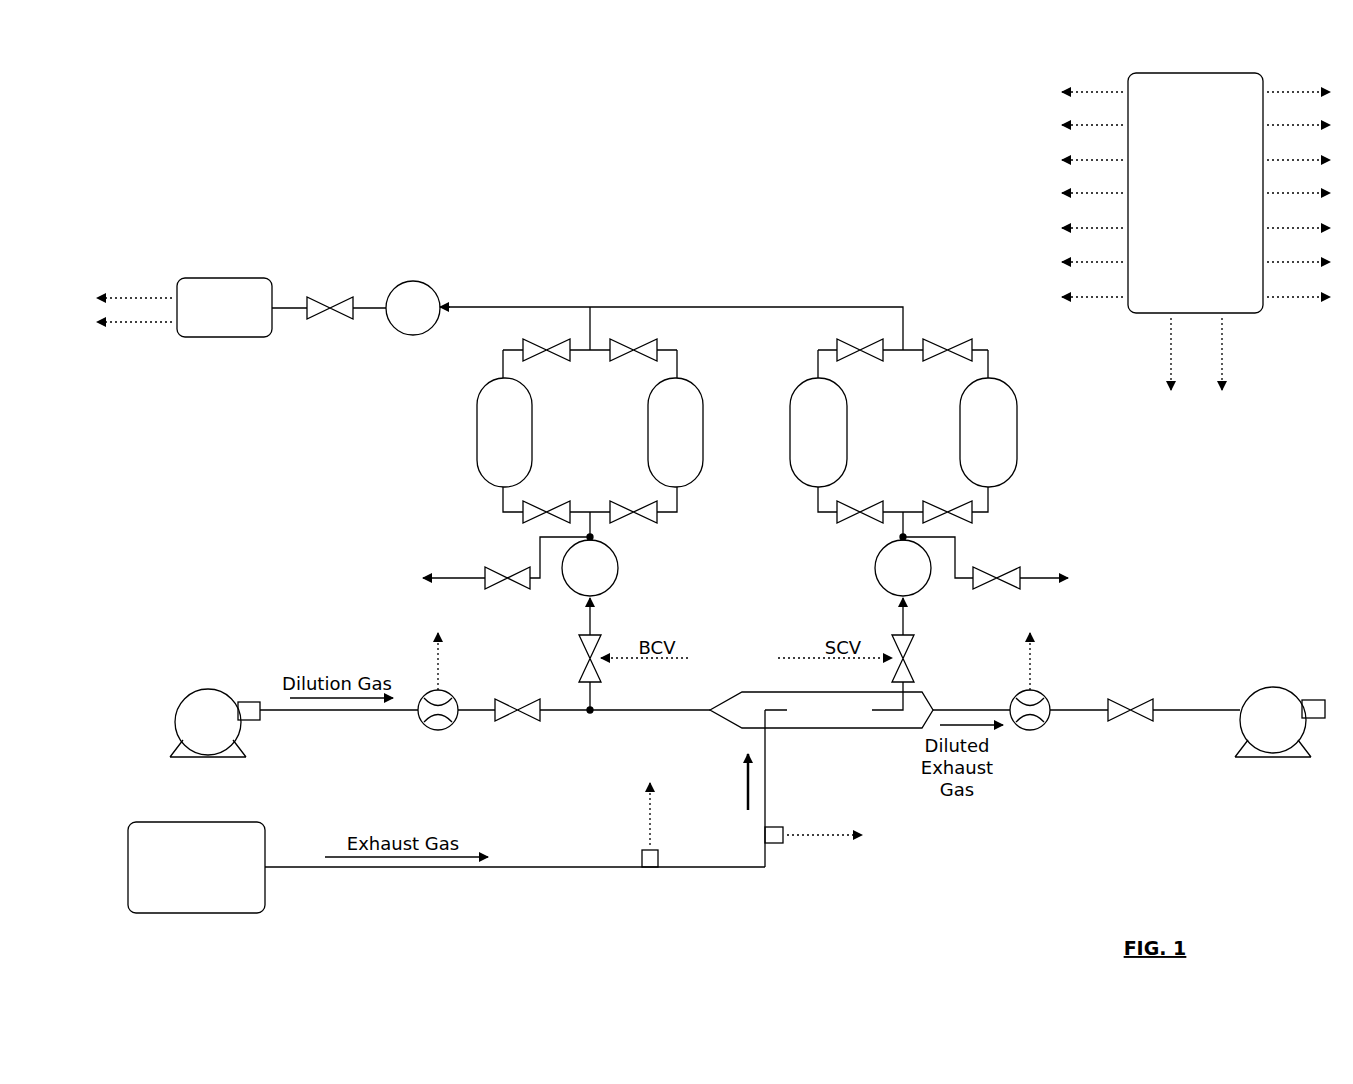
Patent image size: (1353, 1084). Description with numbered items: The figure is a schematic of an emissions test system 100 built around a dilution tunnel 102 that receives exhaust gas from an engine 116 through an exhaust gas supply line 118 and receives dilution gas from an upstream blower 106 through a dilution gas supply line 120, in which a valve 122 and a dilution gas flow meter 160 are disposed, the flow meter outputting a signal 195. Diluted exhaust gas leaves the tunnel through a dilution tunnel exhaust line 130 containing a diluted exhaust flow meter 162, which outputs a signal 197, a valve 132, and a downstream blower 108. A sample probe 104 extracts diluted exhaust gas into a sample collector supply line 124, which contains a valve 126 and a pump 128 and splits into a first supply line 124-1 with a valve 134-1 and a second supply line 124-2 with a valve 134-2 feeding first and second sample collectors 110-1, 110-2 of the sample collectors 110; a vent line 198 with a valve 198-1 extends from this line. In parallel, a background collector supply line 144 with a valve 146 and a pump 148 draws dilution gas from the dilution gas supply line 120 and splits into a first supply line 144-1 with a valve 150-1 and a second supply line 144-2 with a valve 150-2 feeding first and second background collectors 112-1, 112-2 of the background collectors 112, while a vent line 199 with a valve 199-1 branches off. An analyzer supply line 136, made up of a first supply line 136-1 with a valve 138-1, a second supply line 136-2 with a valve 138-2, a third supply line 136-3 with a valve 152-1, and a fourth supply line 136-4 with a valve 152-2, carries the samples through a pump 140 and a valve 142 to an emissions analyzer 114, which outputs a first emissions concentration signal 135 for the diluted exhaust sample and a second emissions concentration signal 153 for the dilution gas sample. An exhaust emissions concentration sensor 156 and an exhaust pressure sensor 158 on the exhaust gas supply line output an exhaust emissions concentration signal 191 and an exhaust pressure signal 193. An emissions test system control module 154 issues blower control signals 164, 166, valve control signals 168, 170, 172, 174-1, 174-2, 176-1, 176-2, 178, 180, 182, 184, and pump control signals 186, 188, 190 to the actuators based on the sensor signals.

The emissions test system 100 is at (230, 97).
The dilution tunnel 102 is at (834, 729).
The sample probe 104 is at (887, 711).
The upstream blower 106 is at (186, 693).
The downstream blower 108 is at (1250, 697).
The sample collectors 110 is at (1032, 459).
The first sample collector 110-1 is at (848, 426).
The second sample collector 110-2 is at (1018, 426).
The background collectors 112 is at (460, 459).
The first background collector 112-1 is at (535, 426).
The second background collector 112-2 is at (706, 426).
The emissions analyzer 114 is at (215, 276).
The engine 116 is at (189, 822).
The exhaust gas supply line 118 is at (561, 870).
The dilution gas supply line 120 is at (388, 715).
The valve 122 is at (543, 722).
The sample collector supply line 124 is at (899, 615).
The first supply line 124-1 is at (818, 501).
The second supply line 124-2 is at (992, 501).
The valve 126 is at (915, 673).
The pump 128 is at (876, 570).
The dilution tunnel exhaust line 130 is at (1213, 715).
The valve 132 is at (1143, 722).
The valve 134-1 is at (840, 523).
The valve 134-2 is at (972, 523).
The first emissions concentration (EC1) signal 135 is at (113, 295).
The analyzer supply line 136 is at (783, 305).
The first supply line 136-1 is at (818, 368).
The second supply line 136-2 is at (992, 368).
The third supply line 136-3 is at (503, 368).
The fourth supply line 136-4 is at (680, 360).
The valve 138-1 is at (837, 347).
The valve 138-2 is at (973, 347).
The pump 140 is at (405, 284).
The valve 142 is at (343, 300).
The background collector supply line 144 is at (597, 615).
The first supply line 144-1 is at (503, 501).
The second supply line 144-2 is at (690, 506).
The valve 146 is at (578, 669).
The pump 148 is at (620, 571).
The valve 150-1 is at (525, 523).
The valve 150-2 is at (659, 523).
The valve 152-1 is at (523, 346).
The valve 152-2 is at (658, 347).
The second emissions concentration (EC2) signal 153 is at (113, 326).
The ETS control module 154 is at (1203, 73).
The exhaust emissions concentration (EEC) sensor 156 is at (642, 852).
The exhaust pressure (EXP) sensor 158 is at (783, 843).
The dilution gas flow meter 160 is at (450, 729).
The diluted exhaust flow meter 162 is at (1032, 731).
The blower control signal 164 is at (1092, 80).
The blower control signal 166 is at (1092, 113).
The valve control signal 168 is at (1092, 148).
The valve control signal 170 is at (1092, 181).
The valve control signal 172 is at (1092, 216).
The valve control signal 174-1 is at (1093, 250).
The valve control signal 174-2 is at (1093, 285).
The valve control signal 176-1 is at (1144, 354).
The valve control signal 176-2 is at (1251, 354).
The valve control signal 178 is at (1298, 285).
The valve control signal 180 is at (1298, 250).
The valve control signal 182 is at (1298, 216).
The valve control signal 184 is at (1298, 181).
The pump control signal 186 is at (1298, 148).
The pump control signal 188 is at (1298, 113).
The pump control signal 190 is at (1298, 80).
The EEC signal 191 is at (673, 814).
The EXP signal 193 is at (824, 823).
The signal 195 is at (419, 661).
The signal 197 is at (1050, 661).
The vent line 198 is at (1036, 585).
The valve 198-1 is at (1010, 586).
The vent line 199 is at (452, 582).
The valve 199-1 is at (497, 590).